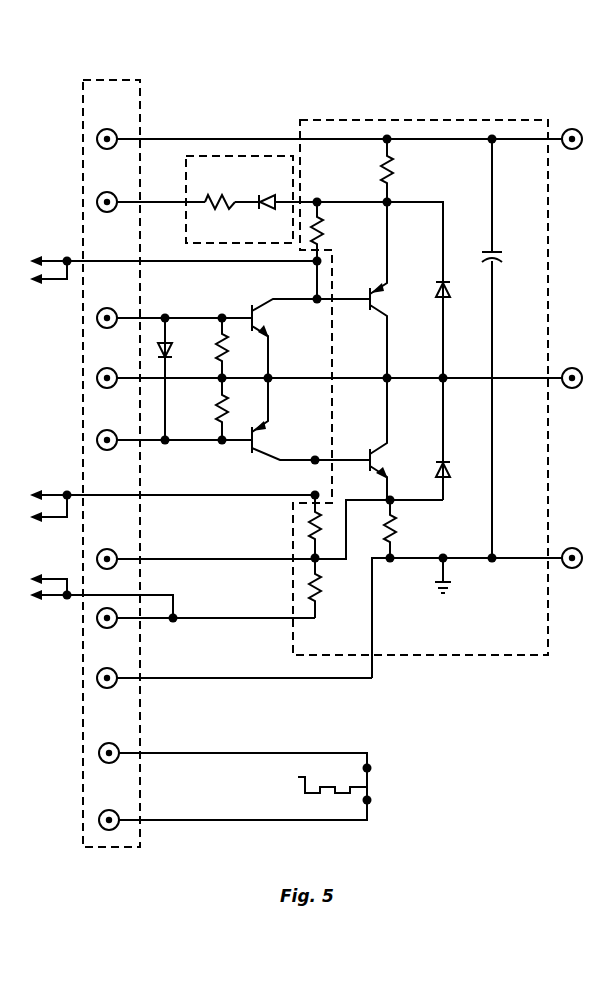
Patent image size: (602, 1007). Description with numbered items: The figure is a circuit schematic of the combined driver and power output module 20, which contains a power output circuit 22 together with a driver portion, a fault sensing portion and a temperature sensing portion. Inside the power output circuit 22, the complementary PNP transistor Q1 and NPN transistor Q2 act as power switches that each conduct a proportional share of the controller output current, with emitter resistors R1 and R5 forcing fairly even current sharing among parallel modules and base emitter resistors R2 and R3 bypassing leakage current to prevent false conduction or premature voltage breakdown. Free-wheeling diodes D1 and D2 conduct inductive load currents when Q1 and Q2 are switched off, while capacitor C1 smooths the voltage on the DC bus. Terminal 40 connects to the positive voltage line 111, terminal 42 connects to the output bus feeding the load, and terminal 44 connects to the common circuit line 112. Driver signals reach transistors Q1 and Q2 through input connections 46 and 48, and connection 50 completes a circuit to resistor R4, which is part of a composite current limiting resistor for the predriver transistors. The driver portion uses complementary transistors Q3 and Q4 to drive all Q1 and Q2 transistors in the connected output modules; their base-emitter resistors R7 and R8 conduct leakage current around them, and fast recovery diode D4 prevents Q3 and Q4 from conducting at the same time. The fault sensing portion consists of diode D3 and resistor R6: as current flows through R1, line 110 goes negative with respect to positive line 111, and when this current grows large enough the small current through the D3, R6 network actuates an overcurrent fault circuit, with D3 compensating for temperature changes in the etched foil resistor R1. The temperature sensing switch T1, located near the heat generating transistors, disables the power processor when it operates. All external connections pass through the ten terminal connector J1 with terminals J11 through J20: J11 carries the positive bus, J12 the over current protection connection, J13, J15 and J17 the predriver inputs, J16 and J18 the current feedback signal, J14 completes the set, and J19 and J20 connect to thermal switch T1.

The combined driver and power output module 20 is at (400, 105).
The power output module 22 is at (524, 120).
The terminal 40 is at (571, 150).
The terminal 42 is at (568, 370).
The terminal 44 is at (570, 548).
The input connection 46 is at (32, 271).
The input connection 48 is at (32, 505).
The input connection 50 is at (34, 588).
The line 110 is at (443, 202).
The positive line 111 is at (466, 138).
The common circuit line 112 is at (370, 681).
The ten terminal connector J1 is at (124, 80).
The output terminal connection J11 is at (96, 136).
The output terminal connection J12 is at (96, 199).
The output terminal connection J13 is at (96, 321).
The output terminal connection J14 is at (96, 378).
The output terminal connection J15 is at (96, 438).
The output terminal connection J16 is at (96, 557).
The output terminal connection J17 is at (96, 622).
The output terminal connection J18 is at (98, 682).
The output terminal connection J19 is at (98, 757).
The output terminal connection J20 is at (100, 824).
The emitter resistor R1 is at (400, 174).
The base emitter resistor R2 is at (338, 232).
The base emitter resistor R3 is at (304, 526).
The current limiting resistor R4 is at (320, 614).
The emitter resistor R5 is at (398, 524).
The resistor R6 is at (216, 196).
The base-emitter resistor R7 is at (230, 358).
The base-emitter resistor R8 is at (214, 406).
The free-wheeling diode D1 is at (452, 289).
The free-wheeling diode D2 is at (452, 470).
The diode D3 is at (268, 195).
The fast recovery diode D4 is at (170, 340).
The PNP transistor Q1 is at (368, 304).
The NPN transistor Q2 is at (366, 455).
The driver transistor Q3 is at (248, 304).
The driver transistor Q4 is at (252, 456).
The capacitor C1 is at (496, 248).
The temperature sensing switch T1 is at (297, 779).